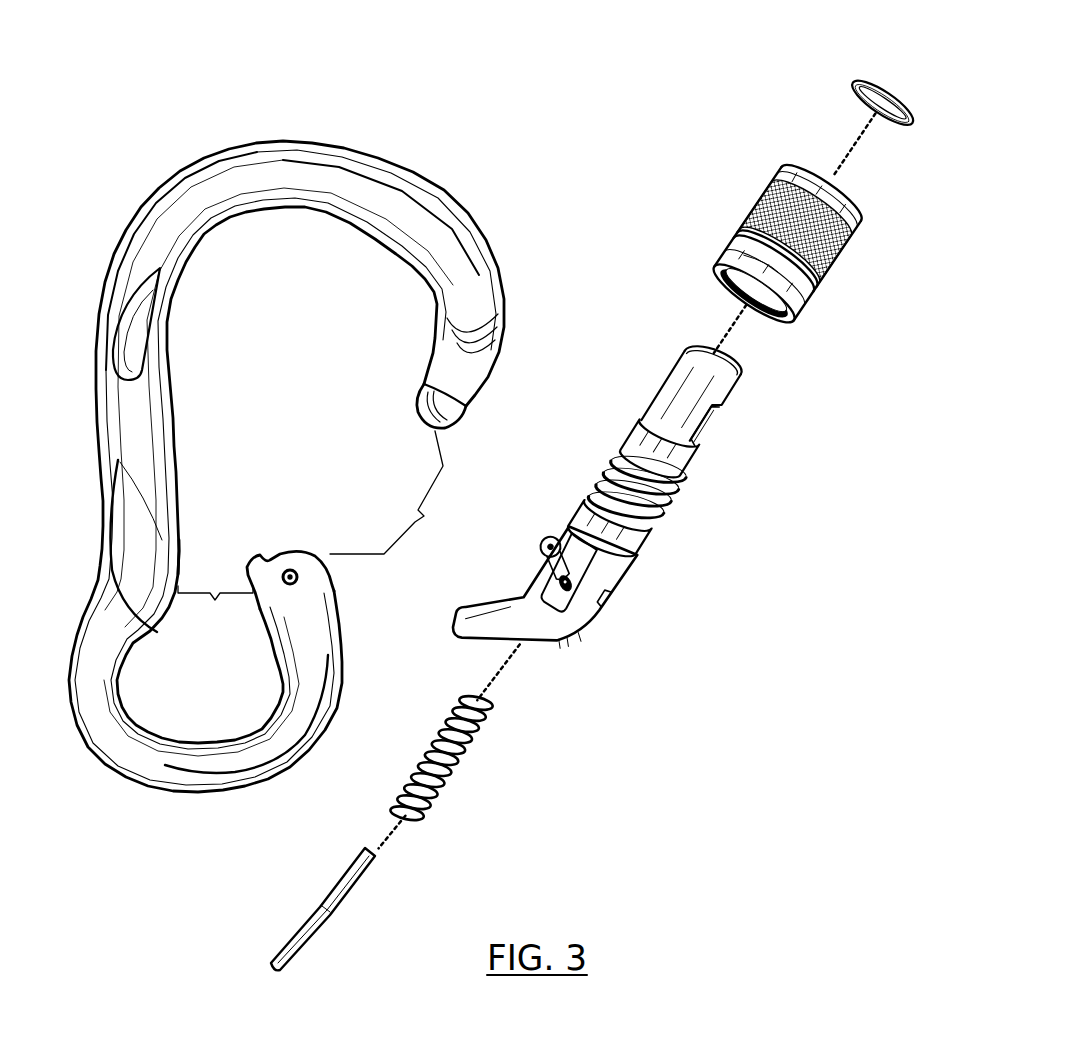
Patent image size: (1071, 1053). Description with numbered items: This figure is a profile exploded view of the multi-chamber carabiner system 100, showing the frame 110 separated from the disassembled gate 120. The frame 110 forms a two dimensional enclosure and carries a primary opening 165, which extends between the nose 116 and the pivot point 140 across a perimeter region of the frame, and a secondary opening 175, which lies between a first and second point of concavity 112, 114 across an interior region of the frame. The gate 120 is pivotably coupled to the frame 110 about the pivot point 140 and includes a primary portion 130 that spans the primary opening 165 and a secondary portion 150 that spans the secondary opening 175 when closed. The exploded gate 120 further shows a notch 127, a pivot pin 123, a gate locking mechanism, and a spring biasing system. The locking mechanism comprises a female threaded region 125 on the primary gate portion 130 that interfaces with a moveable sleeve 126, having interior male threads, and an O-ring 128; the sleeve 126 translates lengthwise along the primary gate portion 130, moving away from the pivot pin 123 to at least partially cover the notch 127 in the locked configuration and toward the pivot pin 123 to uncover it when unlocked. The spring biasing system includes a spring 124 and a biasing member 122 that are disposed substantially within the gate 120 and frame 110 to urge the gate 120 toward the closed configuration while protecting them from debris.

The multi-chamber carabiner system 100 is at (677, 67).
The frame 110 is at (339, 187).
The first point of concavity 112 is at (254, 566).
The second point of concavity 114 is at (180, 571).
The nose 116 is at (473, 341).
The gate 120 is at (686, 662).
The biasing member 122 is at (350, 893).
The pivot pin 123 is at (541, 571).
The spring 124 is at (467, 752).
The female threaded region 125 is at (637, 487).
The moveable sleeve 126 is at (735, 243).
The notch 127 is at (712, 418).
The O-ring 128 is at (860, 95).
The primary portion of the gate 130 is at (757, 373).
The pivot point 140 is at (297, 571).
The secondary portion of the gate 150 is at (457, 643).
The primary opening 165 is at (394, 492).
The secondary opening 175 is at (215, 609).